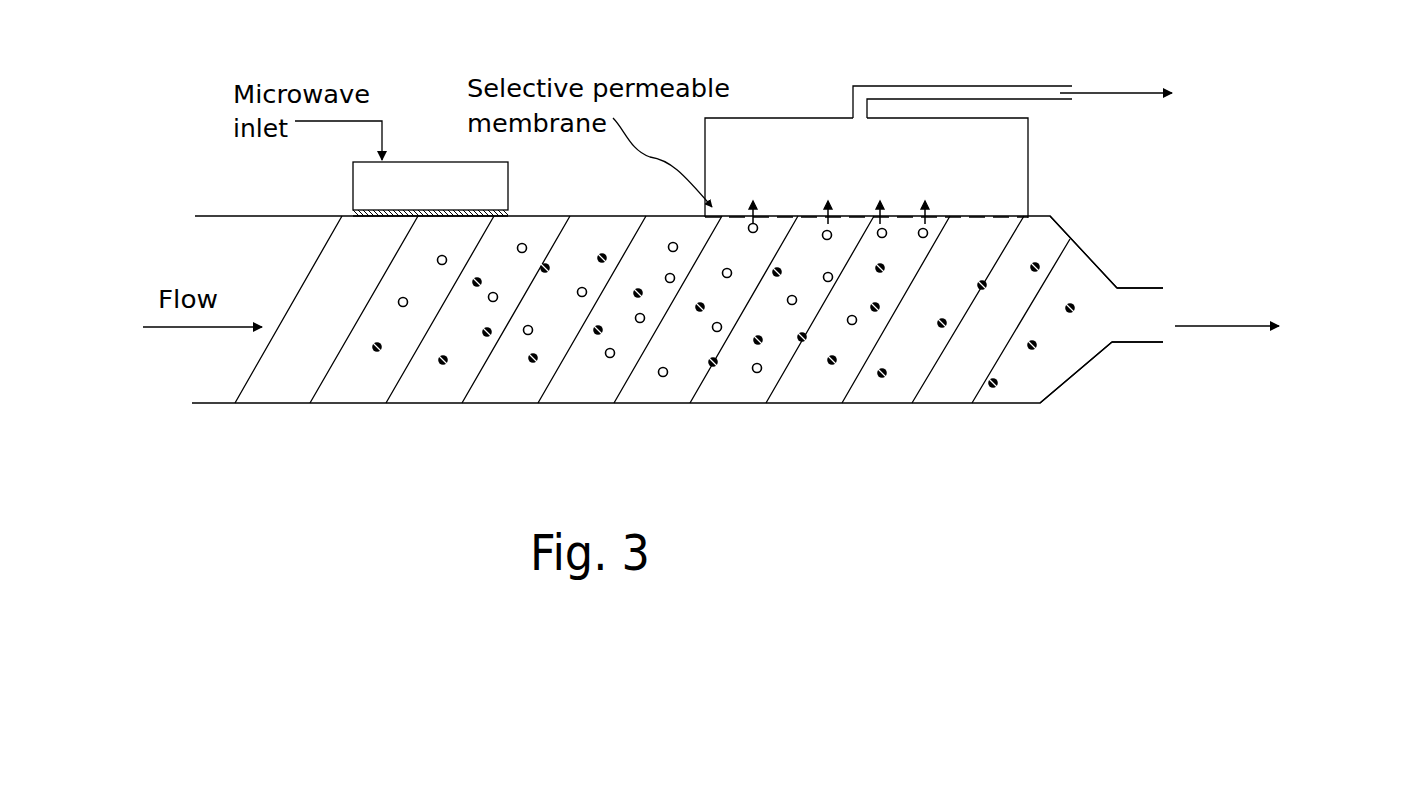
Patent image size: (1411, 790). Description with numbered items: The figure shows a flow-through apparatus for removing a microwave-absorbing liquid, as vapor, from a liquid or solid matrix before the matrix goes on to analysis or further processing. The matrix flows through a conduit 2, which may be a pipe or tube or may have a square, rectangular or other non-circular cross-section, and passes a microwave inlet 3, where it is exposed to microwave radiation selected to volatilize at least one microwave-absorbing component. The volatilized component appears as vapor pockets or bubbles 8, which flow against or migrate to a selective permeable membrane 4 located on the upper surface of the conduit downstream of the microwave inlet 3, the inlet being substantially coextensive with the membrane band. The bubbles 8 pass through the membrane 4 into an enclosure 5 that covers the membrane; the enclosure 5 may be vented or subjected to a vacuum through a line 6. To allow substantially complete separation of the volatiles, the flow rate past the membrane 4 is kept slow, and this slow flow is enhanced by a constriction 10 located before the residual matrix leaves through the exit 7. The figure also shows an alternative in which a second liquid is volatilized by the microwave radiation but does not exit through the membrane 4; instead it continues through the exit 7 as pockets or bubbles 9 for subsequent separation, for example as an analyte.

The conduit 2 is at (232, 216).
The microwave inlet 3 is at (353, 186).
The selective permeable membrane 4 is at (993, 220).
The enclosure 5 is at (1028, 160).
The line 6 is at (990, 86).
The exit 7 is at (1142, 325).
The vapor pocket or bubble 8 is at (757, 374).
The pocket or bubble of second liquid 9 is at (993, 389).
The constriction 10 is at (1083, 368).